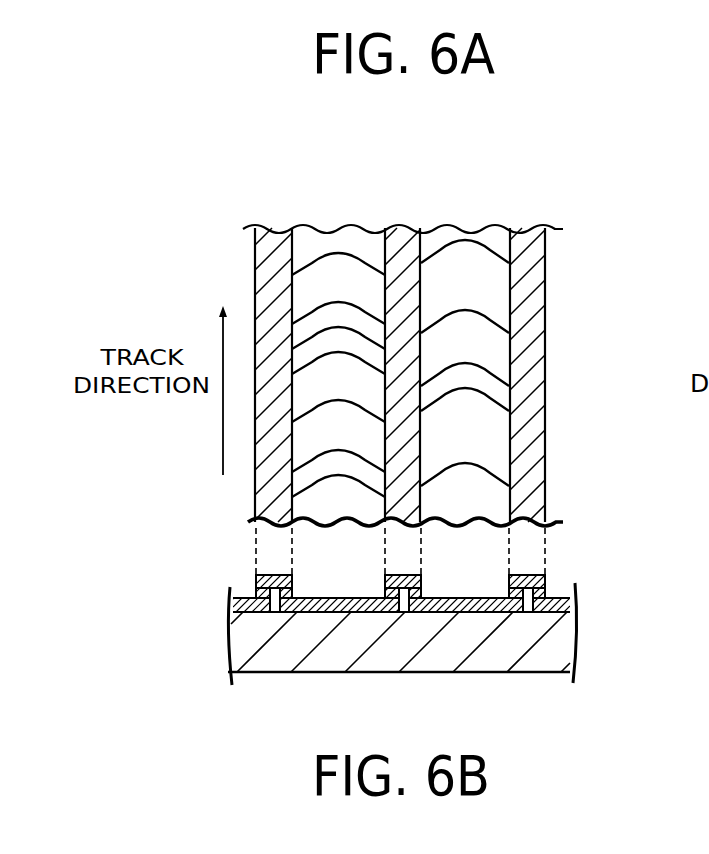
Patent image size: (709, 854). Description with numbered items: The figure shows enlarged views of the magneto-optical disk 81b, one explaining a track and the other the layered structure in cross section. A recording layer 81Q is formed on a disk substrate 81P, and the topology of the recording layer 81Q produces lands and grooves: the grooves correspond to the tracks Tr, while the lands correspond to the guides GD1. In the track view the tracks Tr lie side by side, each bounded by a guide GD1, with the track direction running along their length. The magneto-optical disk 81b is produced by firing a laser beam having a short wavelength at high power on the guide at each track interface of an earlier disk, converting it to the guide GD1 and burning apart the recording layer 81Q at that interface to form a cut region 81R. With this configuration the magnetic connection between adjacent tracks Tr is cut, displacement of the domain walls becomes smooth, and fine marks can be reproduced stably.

In FIG. 6A, the guide GD1 is at (274, 232).
In FIG. 6B, the guide GD1 is at (258, 566).
In FIG. 6A, the track Tr is at (339, 240).
In FIG. 6B, the track Tr is at (340, 582).
In FIG. 6A, the magneto-optical disk 81b is at (645, 291).
In FIG. 6B, the disk substrate 81P is at (563, 636).
In FIG. 6B, the recording layer 81Q is at (571, 598).
In FIG. 6B, the cut region 81R is at (546, 579).